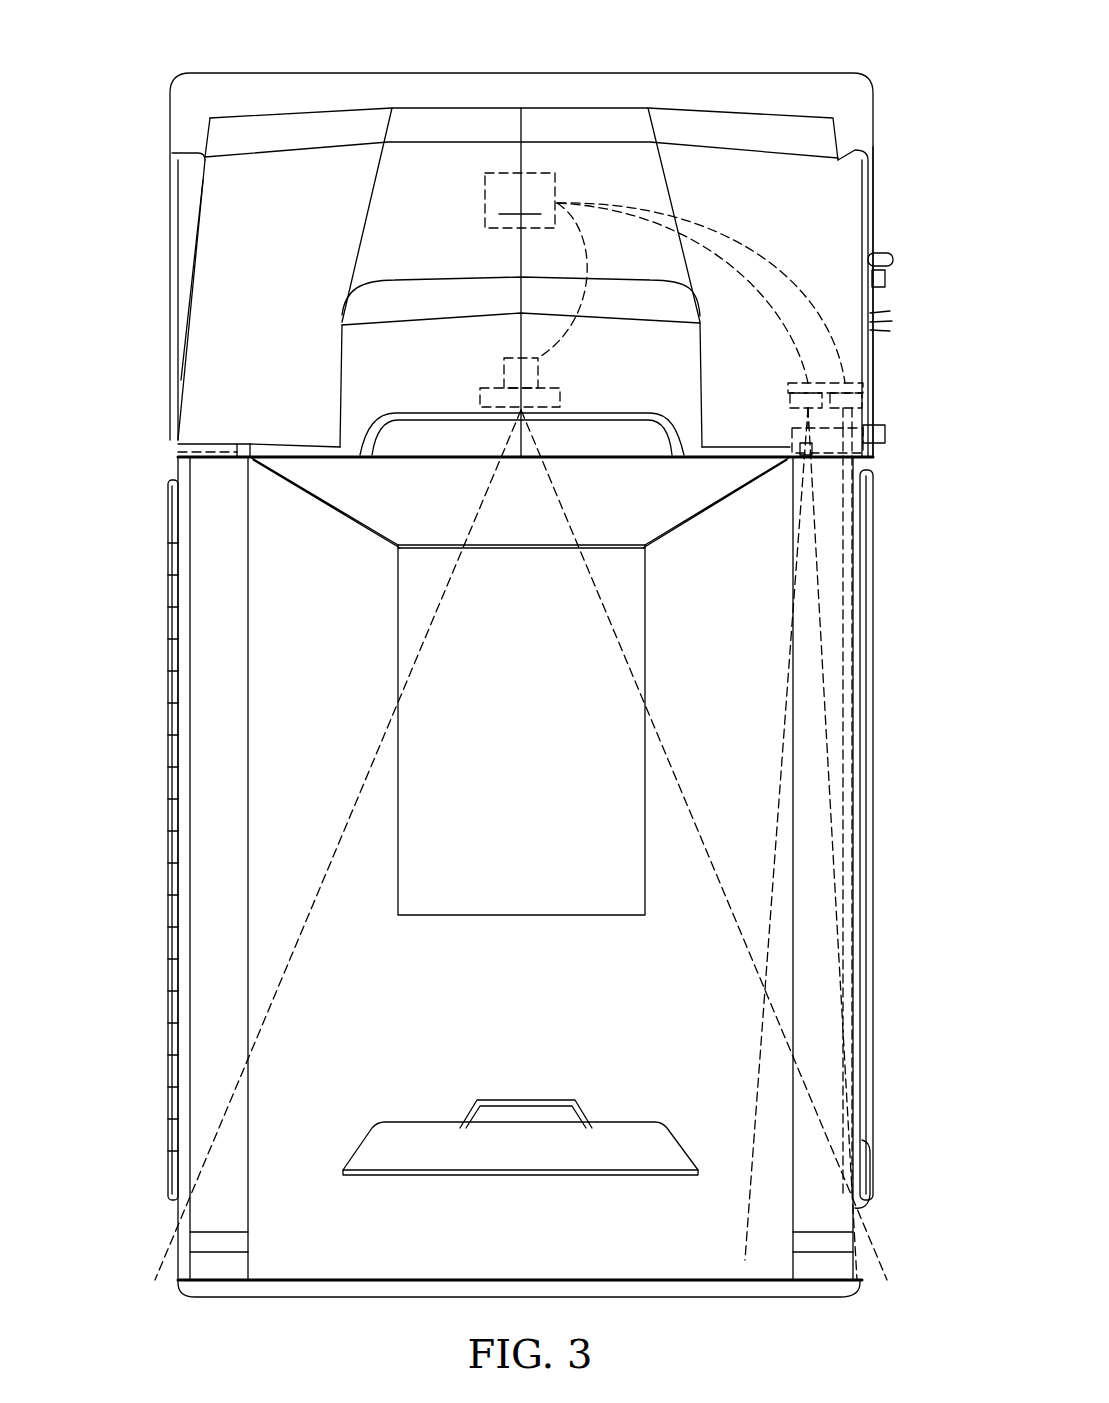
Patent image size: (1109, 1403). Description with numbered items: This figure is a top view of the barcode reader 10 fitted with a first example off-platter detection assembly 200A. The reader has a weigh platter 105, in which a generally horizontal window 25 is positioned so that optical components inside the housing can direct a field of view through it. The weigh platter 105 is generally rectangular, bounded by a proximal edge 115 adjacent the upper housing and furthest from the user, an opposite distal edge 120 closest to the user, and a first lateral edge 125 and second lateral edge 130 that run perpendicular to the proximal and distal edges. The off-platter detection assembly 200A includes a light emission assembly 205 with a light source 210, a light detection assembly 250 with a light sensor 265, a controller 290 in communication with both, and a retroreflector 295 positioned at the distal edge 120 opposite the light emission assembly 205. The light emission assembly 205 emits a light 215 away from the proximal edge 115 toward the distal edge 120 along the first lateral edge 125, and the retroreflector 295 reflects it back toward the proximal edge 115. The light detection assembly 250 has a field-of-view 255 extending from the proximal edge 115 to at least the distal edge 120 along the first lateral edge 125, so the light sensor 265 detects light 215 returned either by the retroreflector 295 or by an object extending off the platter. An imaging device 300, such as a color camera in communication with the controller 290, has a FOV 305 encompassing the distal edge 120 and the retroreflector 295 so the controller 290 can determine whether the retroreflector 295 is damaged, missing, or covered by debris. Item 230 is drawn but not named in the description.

The barcode reader 10 is at (178, 34).
The off-platter detection assembly 200A is at (790, 190).
The controller 290 is at (665, 278).
The imaging device 300 is at (504, 376).
The FOV 305 is at (617, 637).
The light detection assembly 250 is at (780, 390).
The light emission assembly 205 is at (872, 388).
The light source 210 is at (866, 408).
The light sensor 265 is at (792, 410).
The connector 230 is at (888, 436).
The light 215 is at (850, 467).
The field-of-view 255 is at (775, 790).
The proximal edge 115 is at (398, 460).
The weigh platter 105 is at (215, 637).
The second lateral edge 130 is at (185, 735).
The horizontal window 25 is at (518, 900).
The first lateral edge 125 is at (858, 933).
The retroreflector 295 is at (215, 1232).
The distal edge 120 is at (433, 1278).